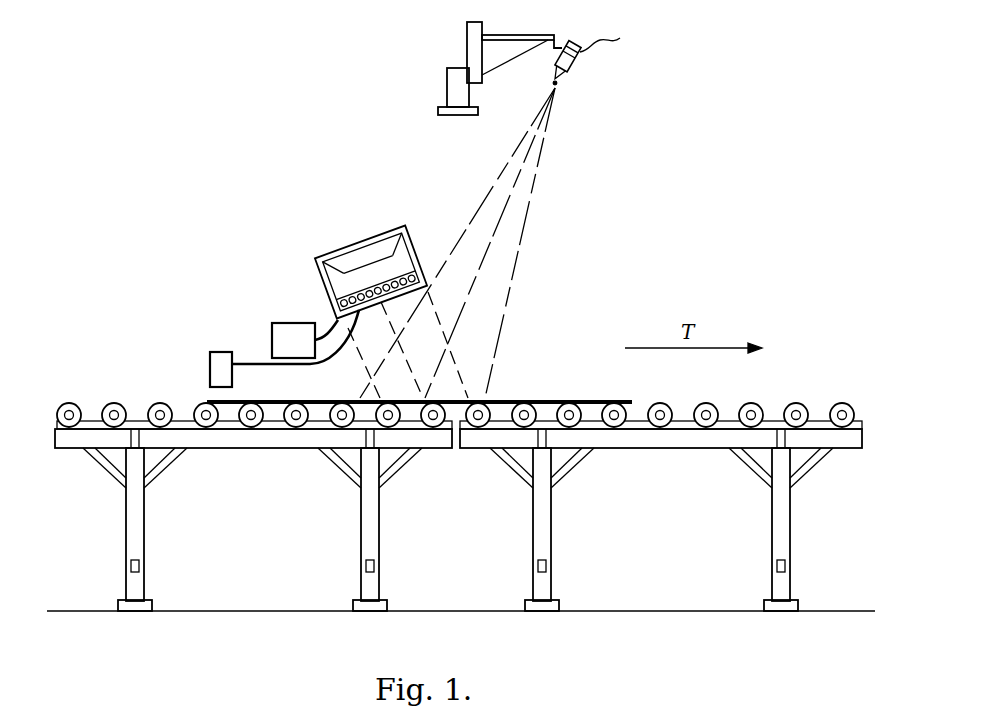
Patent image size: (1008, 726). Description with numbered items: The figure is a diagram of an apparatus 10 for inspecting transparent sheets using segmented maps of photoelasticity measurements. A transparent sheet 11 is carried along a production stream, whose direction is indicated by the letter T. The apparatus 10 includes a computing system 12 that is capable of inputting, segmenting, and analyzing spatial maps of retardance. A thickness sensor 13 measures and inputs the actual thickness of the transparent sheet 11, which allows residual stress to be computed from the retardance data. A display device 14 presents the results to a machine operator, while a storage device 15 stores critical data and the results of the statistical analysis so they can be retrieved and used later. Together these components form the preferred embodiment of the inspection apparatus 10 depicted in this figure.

The apparatus 10 is at (602, 226).
The transparent sheet 11 is at (540, 398).
The computing system 12 is at (332, 301).
The thickness sensor 13 is at (221, 351).
The display device 14 is at (356, 244).
The storage device 15 is at (288, 323).